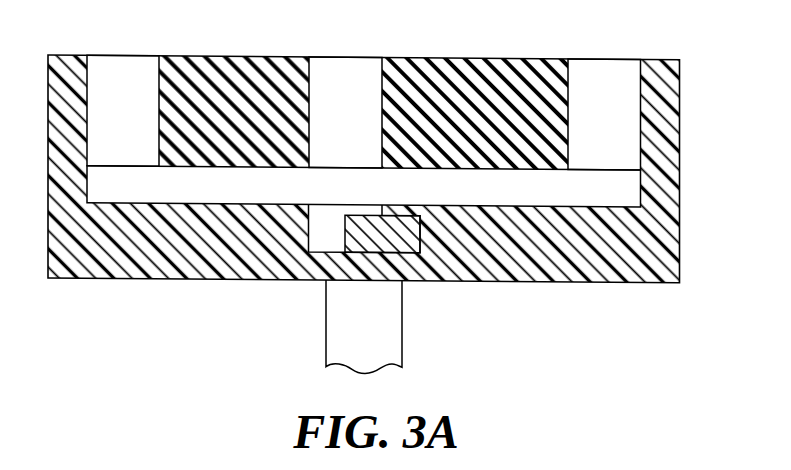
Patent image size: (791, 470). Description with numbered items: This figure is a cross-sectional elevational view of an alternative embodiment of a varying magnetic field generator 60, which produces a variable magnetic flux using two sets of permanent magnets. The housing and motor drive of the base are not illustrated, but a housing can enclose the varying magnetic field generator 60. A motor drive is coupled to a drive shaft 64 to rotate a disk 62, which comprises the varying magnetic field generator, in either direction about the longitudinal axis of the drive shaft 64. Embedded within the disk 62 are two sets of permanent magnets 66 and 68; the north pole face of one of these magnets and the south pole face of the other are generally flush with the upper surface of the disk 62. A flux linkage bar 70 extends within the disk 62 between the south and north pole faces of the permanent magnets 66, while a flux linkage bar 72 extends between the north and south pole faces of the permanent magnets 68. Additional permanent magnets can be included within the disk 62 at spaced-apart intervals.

The varying magnetic field generator 60 is at (163, 385).
The disk 62 is at (364, 169).
The drive shaft 64 is at (364, 327).
The permanent magnets 66 is at (364, 112).
The permanent magnets 68 is at (345, 111).
The flux linkage bar 70 is at (364, 186).
The flux linkage bar 72 is at (365, 228).